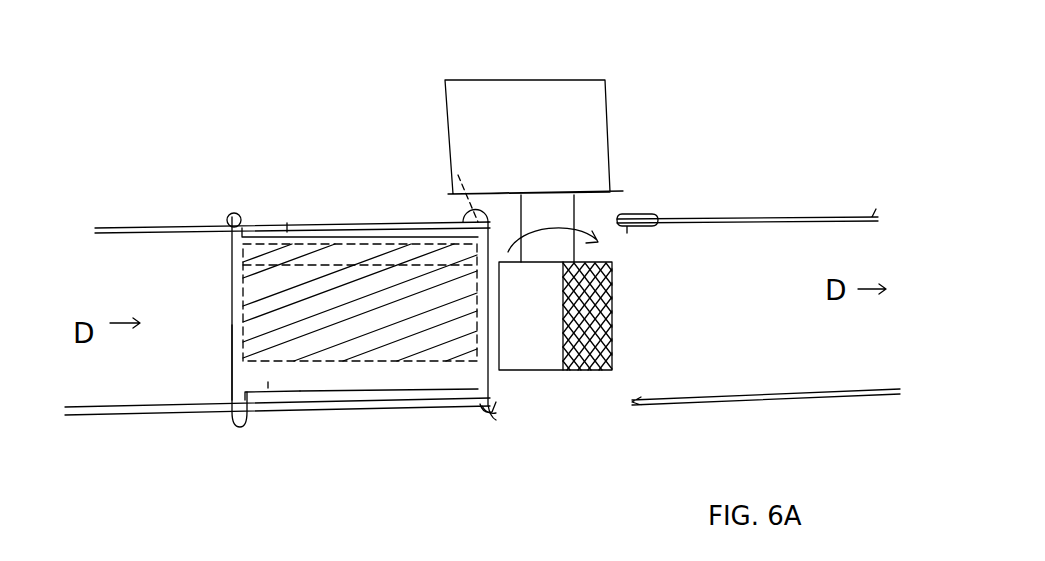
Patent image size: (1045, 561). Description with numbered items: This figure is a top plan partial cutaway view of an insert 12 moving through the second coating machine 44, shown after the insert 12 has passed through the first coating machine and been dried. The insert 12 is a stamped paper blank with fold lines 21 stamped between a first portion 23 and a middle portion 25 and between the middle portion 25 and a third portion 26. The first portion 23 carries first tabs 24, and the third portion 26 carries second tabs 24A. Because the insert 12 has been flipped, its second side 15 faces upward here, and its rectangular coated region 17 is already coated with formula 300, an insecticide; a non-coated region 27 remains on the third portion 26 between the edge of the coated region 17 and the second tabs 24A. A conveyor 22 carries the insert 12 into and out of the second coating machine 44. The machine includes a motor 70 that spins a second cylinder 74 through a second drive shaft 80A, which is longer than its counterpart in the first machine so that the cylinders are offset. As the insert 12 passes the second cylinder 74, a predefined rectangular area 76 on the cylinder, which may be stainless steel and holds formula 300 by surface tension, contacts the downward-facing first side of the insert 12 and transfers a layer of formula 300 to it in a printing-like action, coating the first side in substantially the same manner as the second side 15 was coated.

The insert 12 is at (245, 302).
The second side 15 is at (345, 313).
The coated region 17 is at (240, 263).
The fold lines 21 is at (382, 272).
The conveyor 22 is at (137, 226).
The first portion 23 is at (268, 243).
The first tabs 24 is at (232, 212).
The second tabs 24A is at (234, 425).
The middle portion 25 is at (232, 328).
The third portion 26 is at (290, 378).
The non-coated region 27 is at (355, 390).
The second coating machine 44 is at (681, 133).
The motor 70 is at (580, 133).
The second cylinder 74 is at (540, 372).
The rectangular area 76 is at (580, 372).
The second drive shaft 80A is at (578, 208).
The formula 300 is at (228, 308).